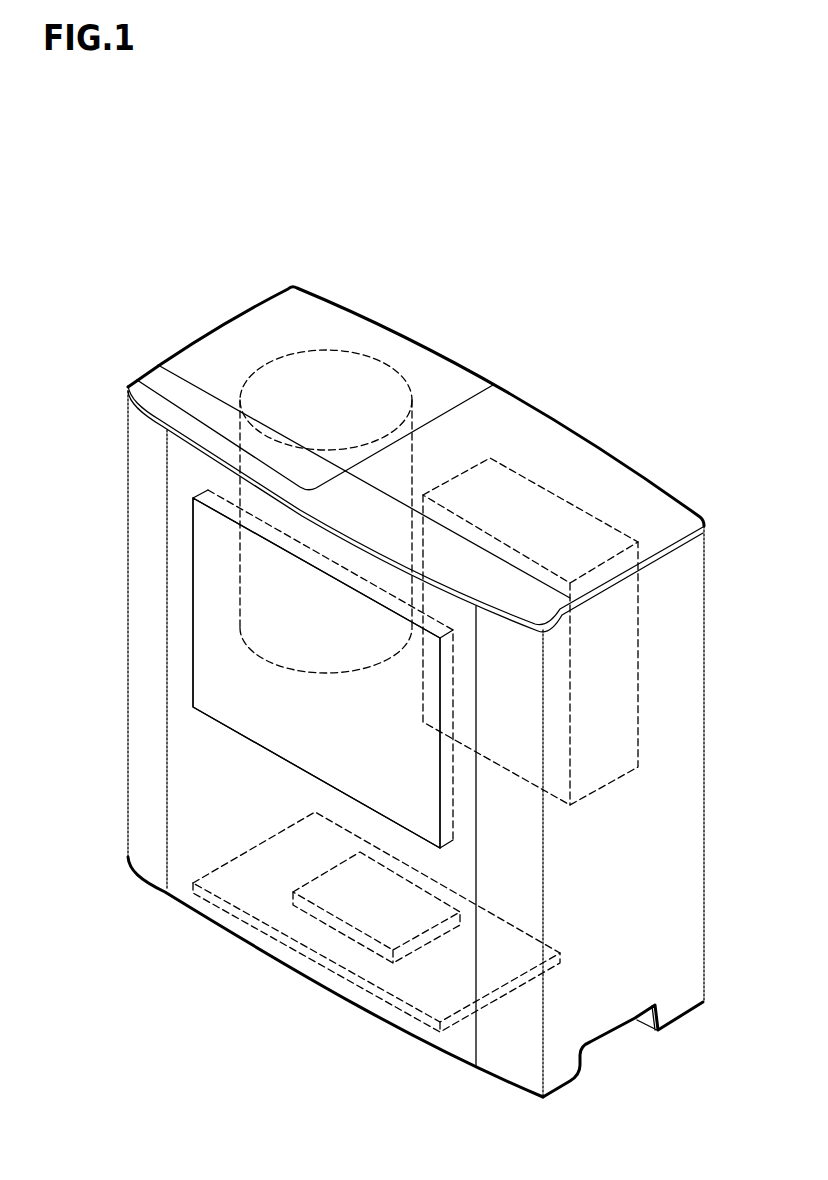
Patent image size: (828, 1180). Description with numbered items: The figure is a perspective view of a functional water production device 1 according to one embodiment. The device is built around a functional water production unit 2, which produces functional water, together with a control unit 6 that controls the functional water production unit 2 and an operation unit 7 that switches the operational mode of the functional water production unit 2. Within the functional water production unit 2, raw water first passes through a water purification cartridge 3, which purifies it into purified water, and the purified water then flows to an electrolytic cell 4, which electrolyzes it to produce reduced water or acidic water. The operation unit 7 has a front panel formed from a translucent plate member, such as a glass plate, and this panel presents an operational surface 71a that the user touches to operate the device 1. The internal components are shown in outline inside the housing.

The apparatus 1 is at (690, 246).
The upper unit 2 is at (655, 358).
The cylindrical member 3 is at (334, 371).
The box-shaped member 4 is at (523, 512).
The base member 6 is at (380, 907).
The panel 7 is at (227, 672).
The display surface 71a is at (220, 570).